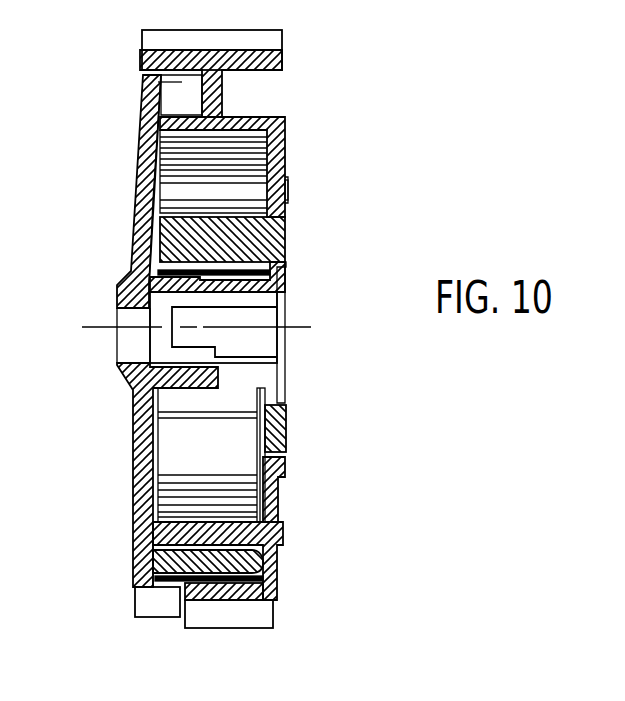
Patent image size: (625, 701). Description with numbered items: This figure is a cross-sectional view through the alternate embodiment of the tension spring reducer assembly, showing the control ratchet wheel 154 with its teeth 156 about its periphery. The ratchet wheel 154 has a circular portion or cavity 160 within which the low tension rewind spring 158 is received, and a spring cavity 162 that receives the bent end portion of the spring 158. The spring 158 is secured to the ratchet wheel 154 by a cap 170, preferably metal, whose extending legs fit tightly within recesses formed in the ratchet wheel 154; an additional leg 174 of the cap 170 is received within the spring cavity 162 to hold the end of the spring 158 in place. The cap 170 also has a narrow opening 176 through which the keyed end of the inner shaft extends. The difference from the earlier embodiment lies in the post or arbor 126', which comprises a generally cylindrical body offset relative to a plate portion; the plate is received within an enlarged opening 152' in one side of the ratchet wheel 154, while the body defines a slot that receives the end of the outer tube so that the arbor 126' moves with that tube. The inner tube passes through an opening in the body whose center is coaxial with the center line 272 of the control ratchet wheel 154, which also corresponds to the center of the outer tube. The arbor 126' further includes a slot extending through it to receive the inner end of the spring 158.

The ratchet wheel 154 is at (285, 60).
The circular portion or cavity 160 is at (230, 137).
The enlarged opening 152' is at (324, 279).
The post or arbor 126' is at (264, 239).
The low tension rewind spring 158 is at (137, 173).
The narrow opening 176 is at (127, 315).
The center line 272 is at (107, 330).
The leg 174 is at (157, 568).
The cap 170 is at (143, 573).
The spring cavity 162 is at (263, 563).
The teeth 156 is at (260, 617).